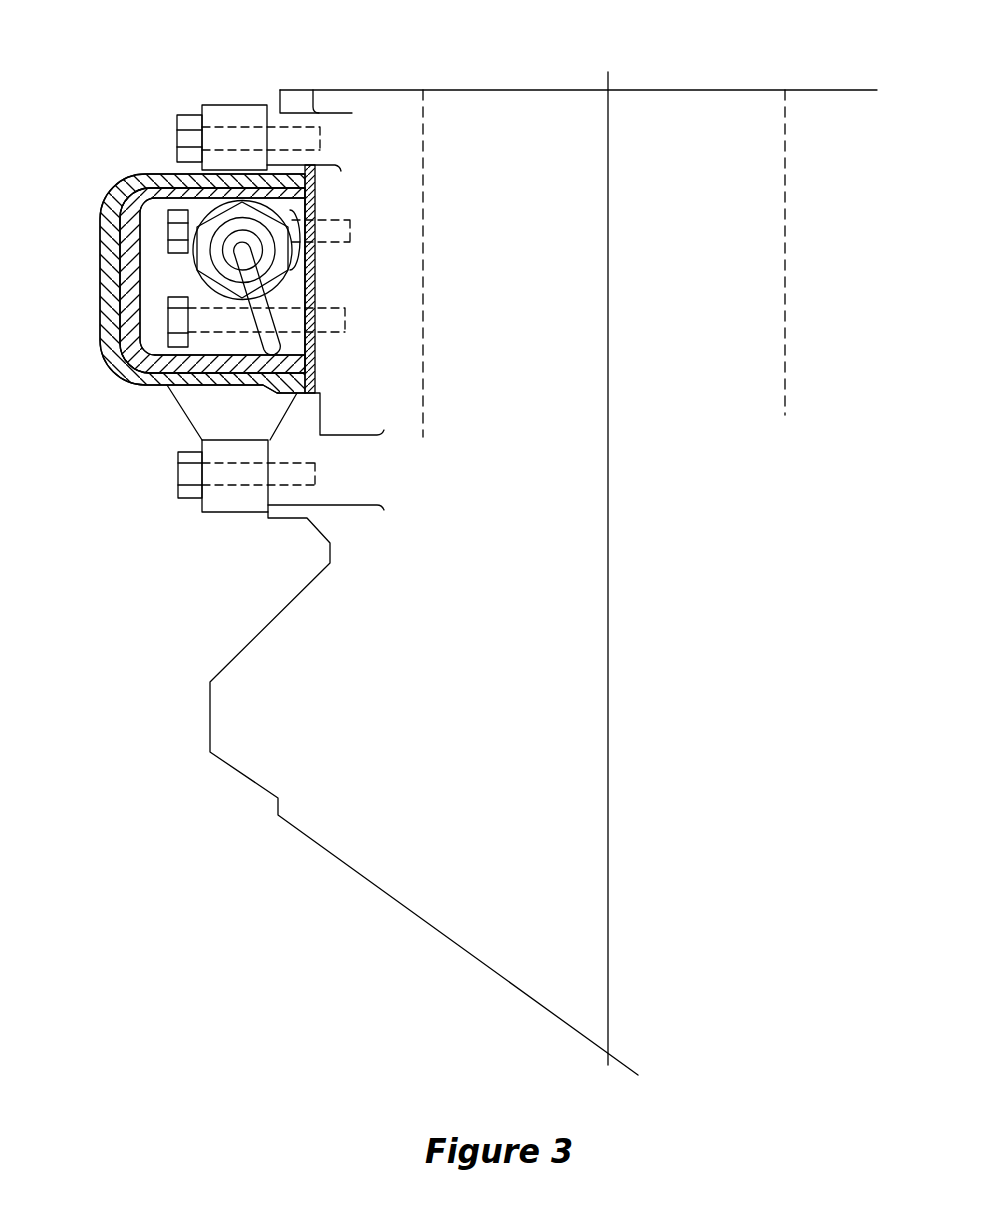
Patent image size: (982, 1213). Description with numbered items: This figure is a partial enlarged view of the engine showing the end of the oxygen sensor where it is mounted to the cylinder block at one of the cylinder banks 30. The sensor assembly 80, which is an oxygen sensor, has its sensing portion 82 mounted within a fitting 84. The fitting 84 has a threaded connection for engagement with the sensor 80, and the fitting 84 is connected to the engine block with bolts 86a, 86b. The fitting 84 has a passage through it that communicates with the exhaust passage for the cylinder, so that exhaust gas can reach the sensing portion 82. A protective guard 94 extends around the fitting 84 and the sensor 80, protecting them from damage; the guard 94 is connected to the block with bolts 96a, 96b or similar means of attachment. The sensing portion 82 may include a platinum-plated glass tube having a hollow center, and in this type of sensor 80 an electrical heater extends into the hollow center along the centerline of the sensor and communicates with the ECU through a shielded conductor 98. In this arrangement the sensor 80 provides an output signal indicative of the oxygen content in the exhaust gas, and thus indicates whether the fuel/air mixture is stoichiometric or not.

The cylinder bank 30 is at (305, 207).
The sensor assembly 80 is at (108, 189).
The sensing portion 82 is at (296, 273).
The fitting 84 is at (150, 285).
The bolt 86a is at (167, 210).
The bolt 86b is at (145, 366).
The protective guard 94 is at (158, 326).
The bolt 96a is at (163, 131).
The bolt 96b is at (177, 474).
The shielded conductor 98 is at (300, 349).